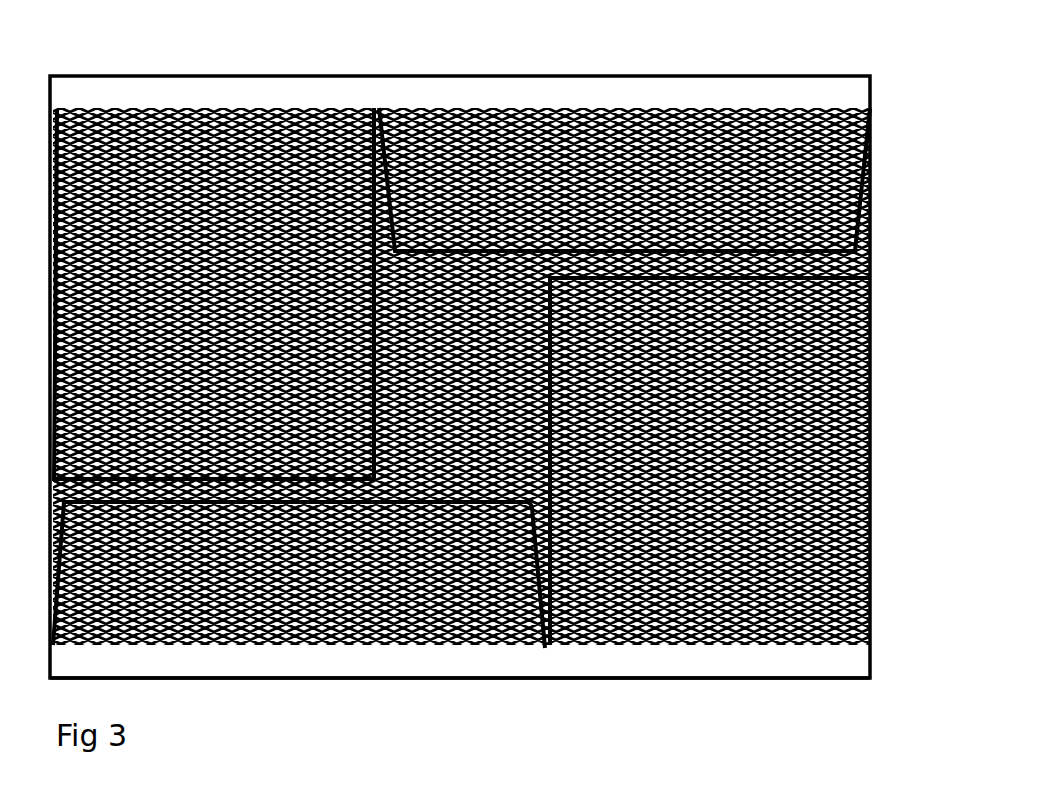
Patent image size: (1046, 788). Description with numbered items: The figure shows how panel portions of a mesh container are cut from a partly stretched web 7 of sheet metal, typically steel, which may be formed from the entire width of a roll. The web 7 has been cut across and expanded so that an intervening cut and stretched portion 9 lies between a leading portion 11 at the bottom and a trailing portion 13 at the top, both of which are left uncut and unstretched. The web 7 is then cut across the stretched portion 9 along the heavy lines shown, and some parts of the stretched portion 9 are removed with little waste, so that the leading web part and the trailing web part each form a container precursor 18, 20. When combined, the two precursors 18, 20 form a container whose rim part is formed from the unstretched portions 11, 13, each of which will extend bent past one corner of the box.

The web of sheet metal 7 is at (683, 688).
The cut and stretched portion 9 is at (470, 340).
The leading portion 11 is at (296, 660).
The trailing portion 13 is at (648, 86).
The container precursor 18 is at (830, 652).
The container precursor 20 is at (828, 200).